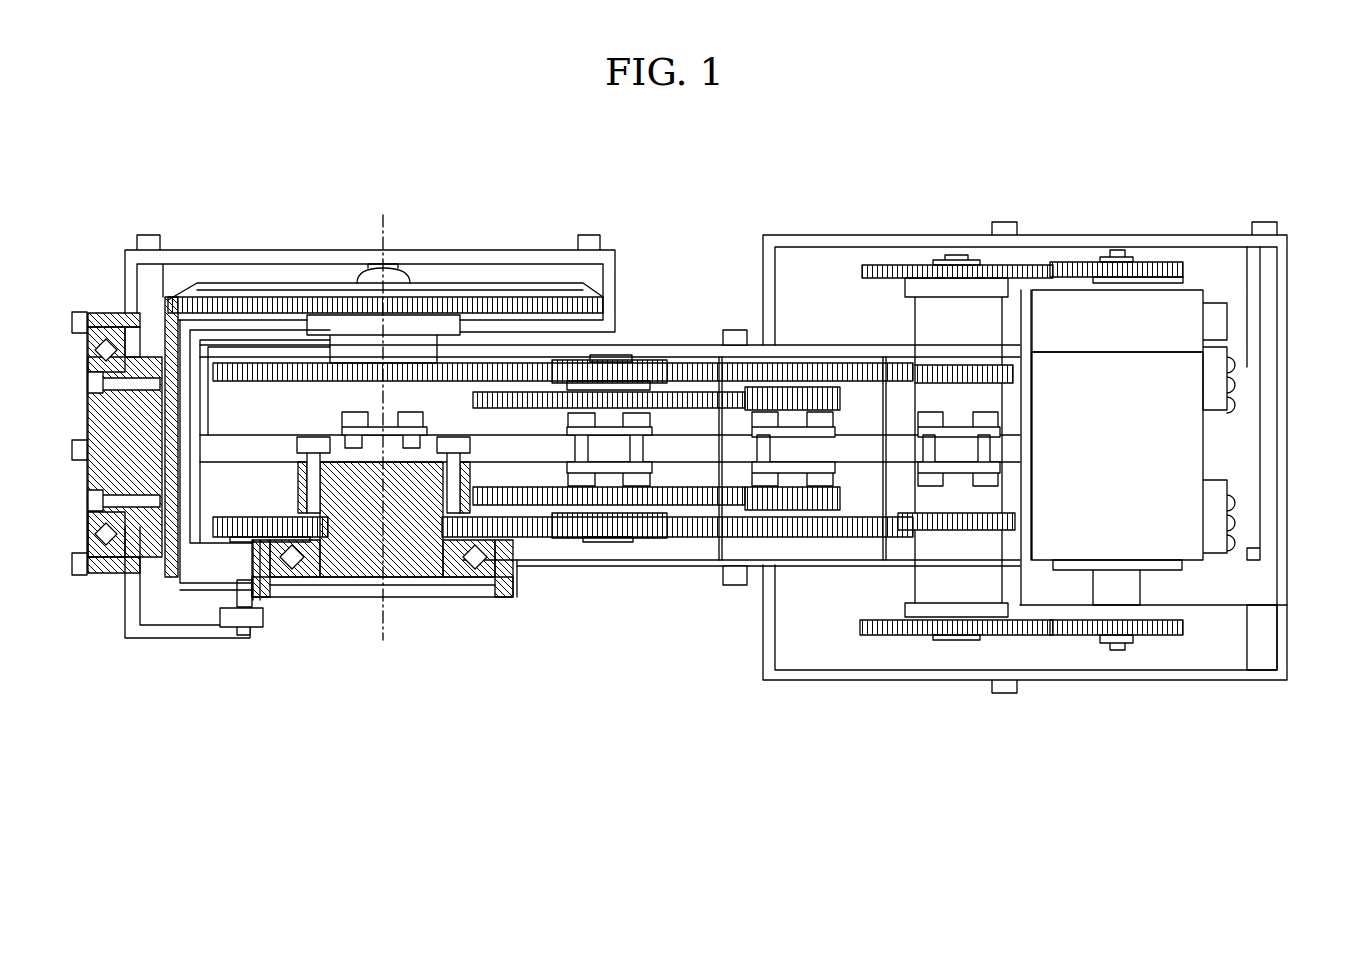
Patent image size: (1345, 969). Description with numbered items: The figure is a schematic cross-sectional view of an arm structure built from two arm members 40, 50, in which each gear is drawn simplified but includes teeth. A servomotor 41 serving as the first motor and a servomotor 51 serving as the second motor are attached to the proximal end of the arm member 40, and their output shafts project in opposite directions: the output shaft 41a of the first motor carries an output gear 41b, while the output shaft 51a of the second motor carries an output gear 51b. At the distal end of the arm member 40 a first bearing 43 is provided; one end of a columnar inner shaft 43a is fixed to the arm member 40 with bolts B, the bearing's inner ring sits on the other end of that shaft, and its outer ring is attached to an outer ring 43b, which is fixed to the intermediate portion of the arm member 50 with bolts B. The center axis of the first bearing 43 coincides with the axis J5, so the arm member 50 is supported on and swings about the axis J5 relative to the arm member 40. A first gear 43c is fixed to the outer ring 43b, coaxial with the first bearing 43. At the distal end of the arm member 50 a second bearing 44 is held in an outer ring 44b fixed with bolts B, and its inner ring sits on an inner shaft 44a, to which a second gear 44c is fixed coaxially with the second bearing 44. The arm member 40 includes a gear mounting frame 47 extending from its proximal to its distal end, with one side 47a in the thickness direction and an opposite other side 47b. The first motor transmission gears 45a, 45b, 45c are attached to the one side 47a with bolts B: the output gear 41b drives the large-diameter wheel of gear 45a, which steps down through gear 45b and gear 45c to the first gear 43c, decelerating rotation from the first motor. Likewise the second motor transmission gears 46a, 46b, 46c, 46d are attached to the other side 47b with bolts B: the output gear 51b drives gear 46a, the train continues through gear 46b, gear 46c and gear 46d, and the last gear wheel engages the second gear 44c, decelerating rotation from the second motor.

The arm member 40 is at (843, 680).
The servomotor (first motor) 41 is at (1167, 447).
The output shaft 41a is at (1123, 582).
The output gear 41b is at (1165, 637).
The first bearing 43 is at (467, 577).
The inner shaft 43a is at (357, 557).
The outer ring 43b is at (222, 537).
The first gear 43c is at (183, 583).
The second bearing 44 is at (93, 348).
The inner shaft (rotary member) 44a is at (103, 410).
The outer ring 44b is at (98, 310).
The second gear 44c is at (158, 313).
The first motor transmission gear 45a is at (962, 593).
The first motor transmission gear 45b is at (790, 540).
The first motor transmission gear 45c is at (605, 525).
The second motor transmission gear 46a is at (958, 307).
The second motor transmission gear 46b is at (800, 385).
The second motor transmission gear 46c is at (642, 385).
The second motor transmission gear 46d is at (417, 347).
The gear mounting frame 47 is at (720, 520).
The one side in thickness direction 47a is at (888, 470).
The other side in thickness direction 47b is at (884, 420).
The arm member 50 is at (317, 597).
The servomotor (second motor) 51 is at (1190, 325).
The output shaft 51a is at (1140, 283).
The output gear 51b is at (1152, 262).
The bolts B is at (80, 312).
The axis J5 is at (380, 228).